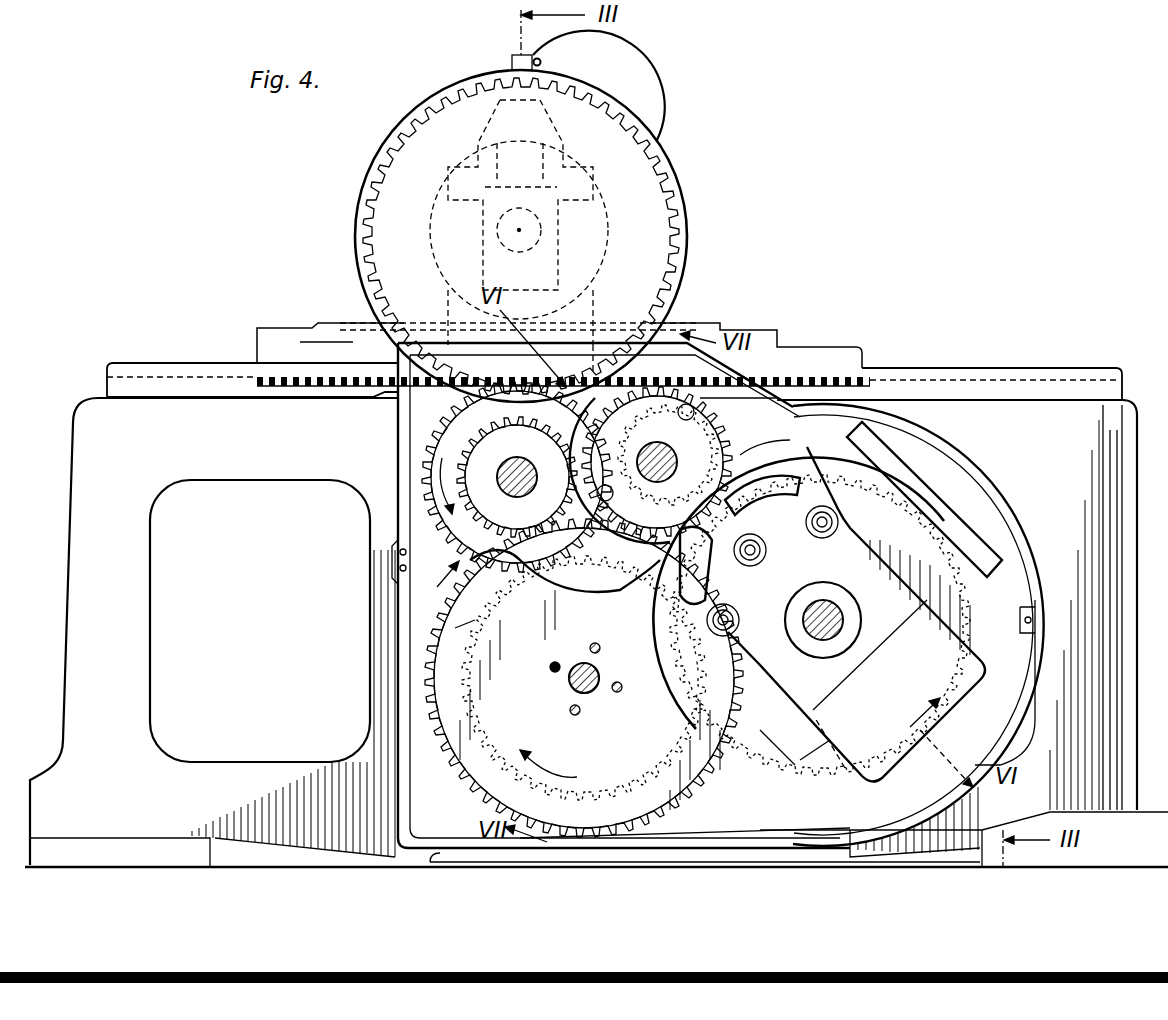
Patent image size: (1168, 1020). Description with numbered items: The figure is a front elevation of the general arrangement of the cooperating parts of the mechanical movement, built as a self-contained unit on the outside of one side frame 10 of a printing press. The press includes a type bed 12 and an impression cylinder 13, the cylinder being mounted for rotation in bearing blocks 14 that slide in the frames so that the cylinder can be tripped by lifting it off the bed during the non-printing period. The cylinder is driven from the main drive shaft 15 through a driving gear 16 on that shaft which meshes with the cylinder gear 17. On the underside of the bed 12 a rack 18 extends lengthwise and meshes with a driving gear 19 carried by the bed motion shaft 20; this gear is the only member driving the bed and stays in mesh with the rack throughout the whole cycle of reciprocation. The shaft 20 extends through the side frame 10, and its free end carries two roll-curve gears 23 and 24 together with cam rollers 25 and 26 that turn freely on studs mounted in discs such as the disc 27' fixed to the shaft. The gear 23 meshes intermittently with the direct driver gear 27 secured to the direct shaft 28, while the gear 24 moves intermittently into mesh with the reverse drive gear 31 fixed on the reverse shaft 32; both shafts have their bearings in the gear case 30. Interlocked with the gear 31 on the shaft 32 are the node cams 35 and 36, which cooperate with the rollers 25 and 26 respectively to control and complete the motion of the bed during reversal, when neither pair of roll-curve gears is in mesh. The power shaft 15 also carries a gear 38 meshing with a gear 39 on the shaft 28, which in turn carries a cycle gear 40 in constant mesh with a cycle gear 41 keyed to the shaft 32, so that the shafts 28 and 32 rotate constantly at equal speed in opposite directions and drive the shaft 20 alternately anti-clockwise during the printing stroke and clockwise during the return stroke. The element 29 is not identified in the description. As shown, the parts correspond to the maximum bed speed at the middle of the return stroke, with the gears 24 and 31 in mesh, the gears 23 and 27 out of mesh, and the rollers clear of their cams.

The side frame 10 is at (1015, 412).
The type bed 12 is at (853, 353).
The impression cylinder 13 is at (593, 340).
The bearing block 14 is at (553, 248).
The main drive shaft 15 is at (500, 462).
The driving gear 16 is at (443, 413).
The cylinder gear 17 is at (400, 362).
The rack 18 is at (853, 387).
The driving gear 19 is at (745, 452).
The bed motion shaft 20 is at (657, 462).
The roll-curve gear 23 is at (717, 426).
The roll-curve gear 24 is at (592, 390).
The cam roller 25 is at (725, 392).
The cam roller 26 is at (567, 503).
The direct driver roll-curve gear 27 is at (584, 678).
The disc 27' is at (785, 431).
The direct shaft 28 is at (583, 663).
The plate 29 is at (351, 326).
The gear case 30 is at (963, 458).
The reverse drive roll-curve gear 31 is at (832, 498).
The reverse shaft 32 is at (820, 640).
The node cam 35 is at (907, 452).
The node cam 36 is at (948, 522).
The gear 38 is at (470, 438).
The pawl 39 is at (430, 611).
The cycle gear 40 is at (455, 628).
The cycle gear 41 is at (841, 758).